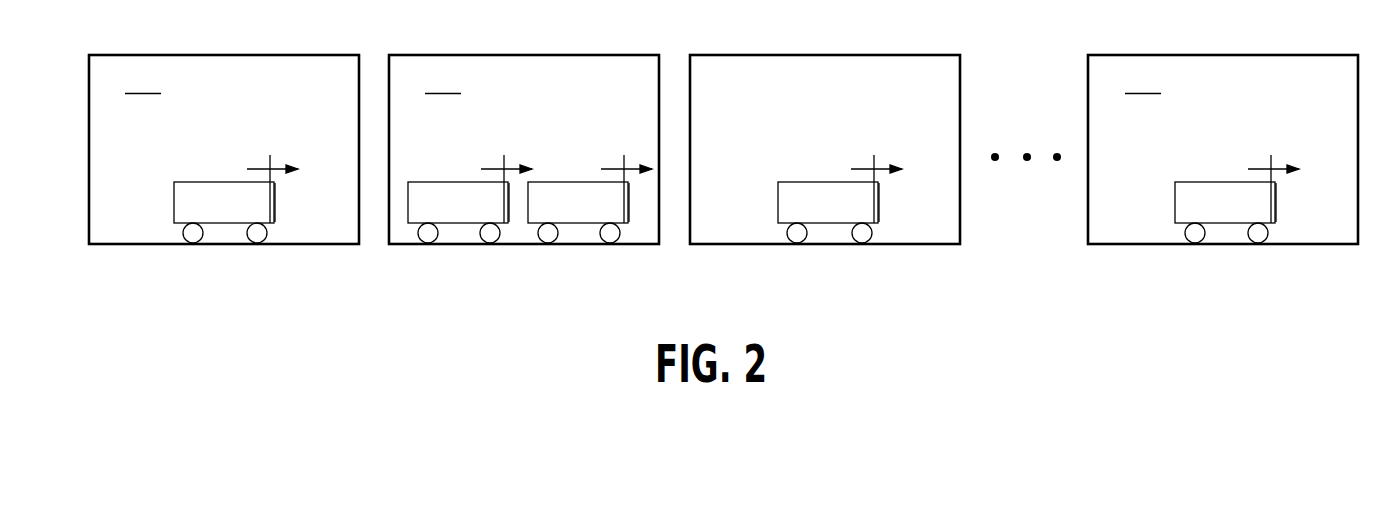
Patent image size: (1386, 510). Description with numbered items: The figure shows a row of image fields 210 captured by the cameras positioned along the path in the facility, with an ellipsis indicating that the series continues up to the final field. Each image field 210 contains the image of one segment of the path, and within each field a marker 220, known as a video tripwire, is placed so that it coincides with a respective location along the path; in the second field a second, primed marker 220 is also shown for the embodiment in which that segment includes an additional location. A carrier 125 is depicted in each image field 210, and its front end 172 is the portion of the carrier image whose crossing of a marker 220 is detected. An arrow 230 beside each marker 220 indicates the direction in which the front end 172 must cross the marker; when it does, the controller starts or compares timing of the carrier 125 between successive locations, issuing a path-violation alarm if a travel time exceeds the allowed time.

The image field 210 is at (723, 149).
The carrier 125 is at (724, 212).
The marker 220 is at (273, 158).
The arrow 230 is at (1251, 169).
The front end 172 is at (275, 203).